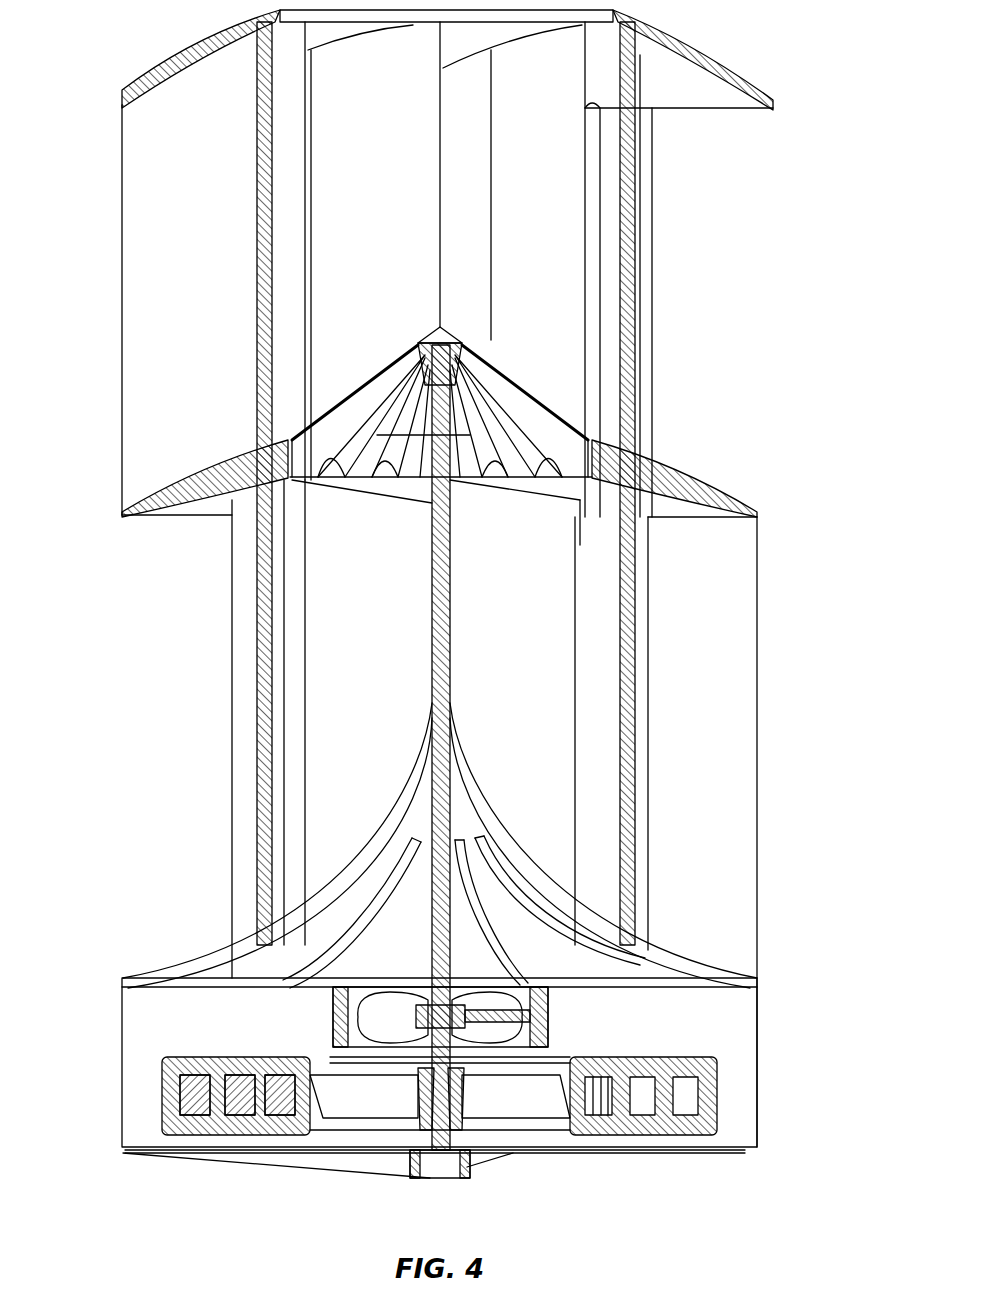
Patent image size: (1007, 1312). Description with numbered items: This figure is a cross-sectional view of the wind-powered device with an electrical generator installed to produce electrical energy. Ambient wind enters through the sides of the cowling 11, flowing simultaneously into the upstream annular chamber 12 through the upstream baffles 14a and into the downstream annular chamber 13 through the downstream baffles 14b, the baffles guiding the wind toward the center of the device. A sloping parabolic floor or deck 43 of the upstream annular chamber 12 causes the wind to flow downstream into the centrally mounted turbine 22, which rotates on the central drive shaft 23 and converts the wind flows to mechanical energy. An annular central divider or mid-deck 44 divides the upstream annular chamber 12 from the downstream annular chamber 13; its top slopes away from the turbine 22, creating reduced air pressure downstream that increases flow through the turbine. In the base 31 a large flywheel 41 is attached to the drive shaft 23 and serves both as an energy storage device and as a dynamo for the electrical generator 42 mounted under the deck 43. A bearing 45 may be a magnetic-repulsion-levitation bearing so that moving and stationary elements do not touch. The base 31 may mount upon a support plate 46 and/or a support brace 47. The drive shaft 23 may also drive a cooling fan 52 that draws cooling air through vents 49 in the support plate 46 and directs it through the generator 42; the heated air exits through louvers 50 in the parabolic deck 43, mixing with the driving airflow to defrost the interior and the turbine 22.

The cowling 11 is at (757, 100).
The downstream annular chamber 13 is at (572, 270).
The downstream baffles 14b is at (140, 280).
The upstream baffles 14a is at (750, 700).
The upstream annular chamber 12 is at (315, 708).
The turbine 22 is at (515, 440).
The annular central divider (mid-deck) 44 is at (655, 492).
The parabolic floor (deck) 43 is at (482, 812).
The louvers 50 is at (393, 842).
The central drive shaft 23 is at (470, 880).
The base 31 is at (758, 1025).
The electrical generator 42 is at (548, 1025).
The flywheel 41 is at (178, 1135).
The support plate 46 is at (712, 1152).
The cooling fan 52 is at (365, 1100).
The bearing 45 is at (452, 1182).
The vents 49 is at (535, 1153).
The support brace 47 is at (257, 1165).